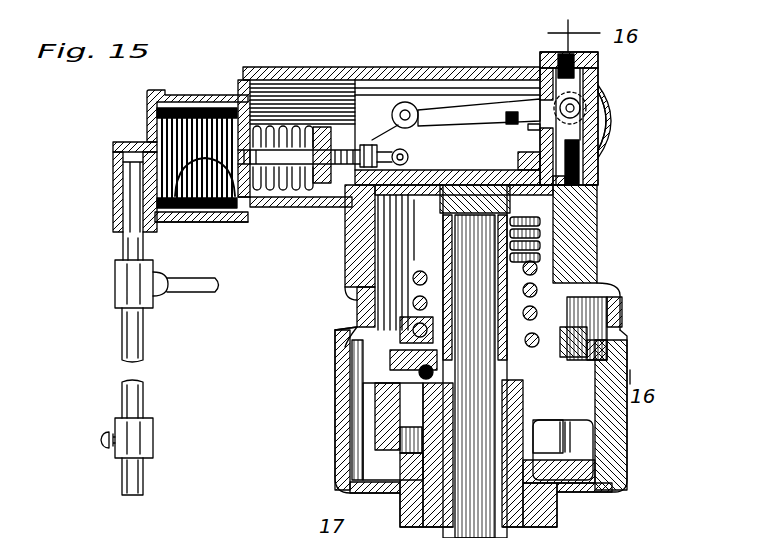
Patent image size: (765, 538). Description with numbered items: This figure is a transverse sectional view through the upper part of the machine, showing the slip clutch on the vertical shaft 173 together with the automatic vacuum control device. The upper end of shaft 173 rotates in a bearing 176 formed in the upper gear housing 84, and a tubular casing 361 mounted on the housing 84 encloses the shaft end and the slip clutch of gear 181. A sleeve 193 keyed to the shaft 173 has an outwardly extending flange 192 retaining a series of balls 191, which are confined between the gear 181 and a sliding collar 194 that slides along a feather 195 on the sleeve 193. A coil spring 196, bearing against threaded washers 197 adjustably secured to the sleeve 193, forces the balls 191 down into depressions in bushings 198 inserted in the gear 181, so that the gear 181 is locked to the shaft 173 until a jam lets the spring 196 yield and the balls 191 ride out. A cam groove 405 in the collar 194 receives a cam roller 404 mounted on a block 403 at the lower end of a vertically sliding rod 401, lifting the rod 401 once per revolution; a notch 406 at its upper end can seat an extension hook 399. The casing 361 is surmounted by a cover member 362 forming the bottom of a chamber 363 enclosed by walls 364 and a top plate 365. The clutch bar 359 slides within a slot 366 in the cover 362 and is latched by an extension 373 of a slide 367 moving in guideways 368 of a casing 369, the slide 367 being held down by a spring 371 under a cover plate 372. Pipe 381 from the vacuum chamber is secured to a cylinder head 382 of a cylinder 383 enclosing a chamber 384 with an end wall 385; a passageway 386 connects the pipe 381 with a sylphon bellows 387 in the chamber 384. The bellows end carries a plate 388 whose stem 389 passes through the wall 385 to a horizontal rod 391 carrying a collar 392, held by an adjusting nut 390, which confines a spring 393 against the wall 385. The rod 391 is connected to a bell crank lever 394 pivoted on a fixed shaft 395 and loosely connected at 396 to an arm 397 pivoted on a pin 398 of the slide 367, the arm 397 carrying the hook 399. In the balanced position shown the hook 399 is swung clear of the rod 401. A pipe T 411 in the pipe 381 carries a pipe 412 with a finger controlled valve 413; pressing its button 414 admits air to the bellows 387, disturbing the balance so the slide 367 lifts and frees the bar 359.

The top plate 365 is at (305, 68).
The plate 388 is at (232, 100).
The cylinder 383 is at (230, 96).
The sylphon bellows 387 is at (155, 130).
The cylinder head 382 is at (118, 190).
The passageway 386 is at (133, 204).
The pipe 381 is at (145, 252).
The pipe T 411 is at (128, 283).
The pipe 412 is at (128, 336).
The finger controlled valve 413 is at (128, 428).
The button 414 is at (105, 440).
The end wall 385 is at (262, 105).
The stem 389 is at (236, 205).
The chamber 384 is at (226, 214).
The spring 393 is at (310, 188).
The horizontal rod 391 is at (292, 188).
The collar 392 is at (331, 136).
The cover member 362 is at (428, 172).
The walls 364 is at (372, 90).
The chamber 363 is at (428, 95).
The fixed shaft 395 is at (406, 103).
The bell crank lever 394 is at (460, 105).
The adjusting nut 390 is at (379, 125).
The loose connection 396 is at (512, 112).
The extension 373 is at (535, 130).
The slot 366 is at (520, 165).
The cover plate 372 is at (556, 58).
The spring 371 is at (578, 47).
The guideways 368 is at (598, 68).
The arm 397 is at (576, 90).
The casing 369 is at (599, 97).
The slide 367 is at (612, 110).
The pin 398 is at (582, 116).
The extension hook 399 is at (603, 134).
The notch 406 is at (582, 148).
The bar 359 is at (585, 170).
The vertically sliding rod 401 is at (595, 182).
The tubular casing 361 is at (356, 255).
The vertical shaft 173 is at (515, 525).
The threaded washers 197 is at (522, 236).
The coil spring 196 is at (412, 279).
The sleeve 193 is at (440, 293).
The cam groove 405 is at (368, 326).
The upper gear housing 84 is at (628, 374).
The sliding collar 194 is at (395, 357).
The balls 191 is at (420, 374).
The flange 192 is at (412, 400).
The bushing 198 is at (408, 425).
The feather 195 is at (600, 297).
The cam roller 404 is at (590, 332).
The block 403 is at (595, 351).
The gear 181 is at (578, 441).
The bearing 176 is at (545, 507).